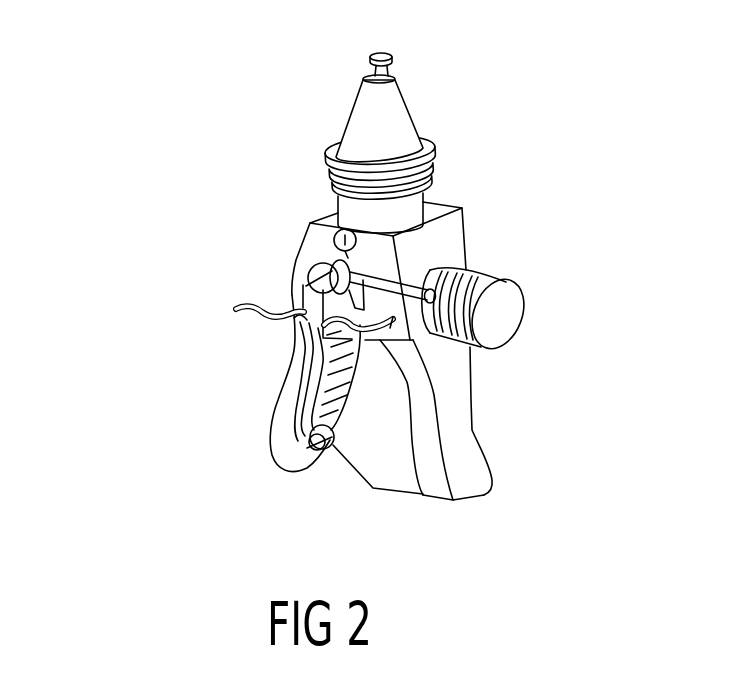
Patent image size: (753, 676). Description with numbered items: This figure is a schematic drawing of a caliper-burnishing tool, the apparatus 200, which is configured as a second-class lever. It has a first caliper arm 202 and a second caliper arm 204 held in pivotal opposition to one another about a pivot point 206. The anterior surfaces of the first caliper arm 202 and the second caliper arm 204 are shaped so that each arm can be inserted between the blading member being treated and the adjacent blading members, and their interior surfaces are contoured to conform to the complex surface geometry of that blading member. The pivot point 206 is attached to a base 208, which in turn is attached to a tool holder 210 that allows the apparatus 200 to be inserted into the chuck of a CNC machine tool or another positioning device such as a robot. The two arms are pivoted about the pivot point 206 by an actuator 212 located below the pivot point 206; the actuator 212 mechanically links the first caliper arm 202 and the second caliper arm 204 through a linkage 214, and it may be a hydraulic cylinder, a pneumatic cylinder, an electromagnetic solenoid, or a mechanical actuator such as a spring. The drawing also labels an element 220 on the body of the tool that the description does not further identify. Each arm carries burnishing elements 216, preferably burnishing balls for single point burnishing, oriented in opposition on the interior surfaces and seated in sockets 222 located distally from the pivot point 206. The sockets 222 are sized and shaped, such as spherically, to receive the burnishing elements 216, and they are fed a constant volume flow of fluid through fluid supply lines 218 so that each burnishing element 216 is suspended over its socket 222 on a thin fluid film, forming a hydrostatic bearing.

The apparatus 200 is at (227, 97).
The first caliper arm 202 is at (473, 431).
The second caliper arm 204 is at (244, 383).
The pivot point 206 is at (337, 223).
The base 208 is at (430, 195).
The tool holder 210 is at (413, 123).
The actuator 212 is at (502, 300).
The linkage 214 is at (388, 278).
The burnishing elements 216 is at (373, 489).
The fluid supply lines 218 is at (304, 371).
The adjustment screw 220 is at (310, 266).
The sockets 222 is at (307, 448).